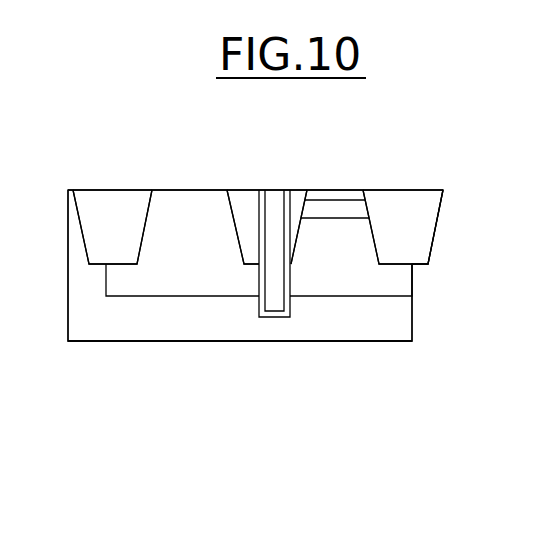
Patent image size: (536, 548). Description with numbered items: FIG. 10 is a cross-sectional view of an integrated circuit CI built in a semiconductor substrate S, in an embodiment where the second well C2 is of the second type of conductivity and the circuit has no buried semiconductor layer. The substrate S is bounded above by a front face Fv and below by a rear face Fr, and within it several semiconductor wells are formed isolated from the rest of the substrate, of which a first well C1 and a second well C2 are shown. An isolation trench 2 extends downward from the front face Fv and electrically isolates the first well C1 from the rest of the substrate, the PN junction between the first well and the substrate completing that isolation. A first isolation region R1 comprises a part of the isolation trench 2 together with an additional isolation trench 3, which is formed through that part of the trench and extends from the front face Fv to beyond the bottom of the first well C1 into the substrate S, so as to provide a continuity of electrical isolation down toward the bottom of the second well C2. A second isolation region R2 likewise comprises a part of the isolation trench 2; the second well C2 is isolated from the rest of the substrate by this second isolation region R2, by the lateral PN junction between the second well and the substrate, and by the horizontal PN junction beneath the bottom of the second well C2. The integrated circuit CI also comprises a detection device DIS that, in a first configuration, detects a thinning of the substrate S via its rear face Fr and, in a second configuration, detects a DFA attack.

The integrated circuit CI is at (428, 137).
The semiconductor substrate S is at (160, 343).
The rear face Fr is at (317, 343).
The front face Fv is at (247, 191).
The isolation trench 2 is at (123, 218).
The additional isolation trench 3 is at (283, 180).
The detection device DIS is at (328, 180).
The first isolation region R1 is at (255, 272).
The second isolation region R2 is at (418, 272).
The first well C1 is at (167, 237).
The second well C2 is at (340, 235).